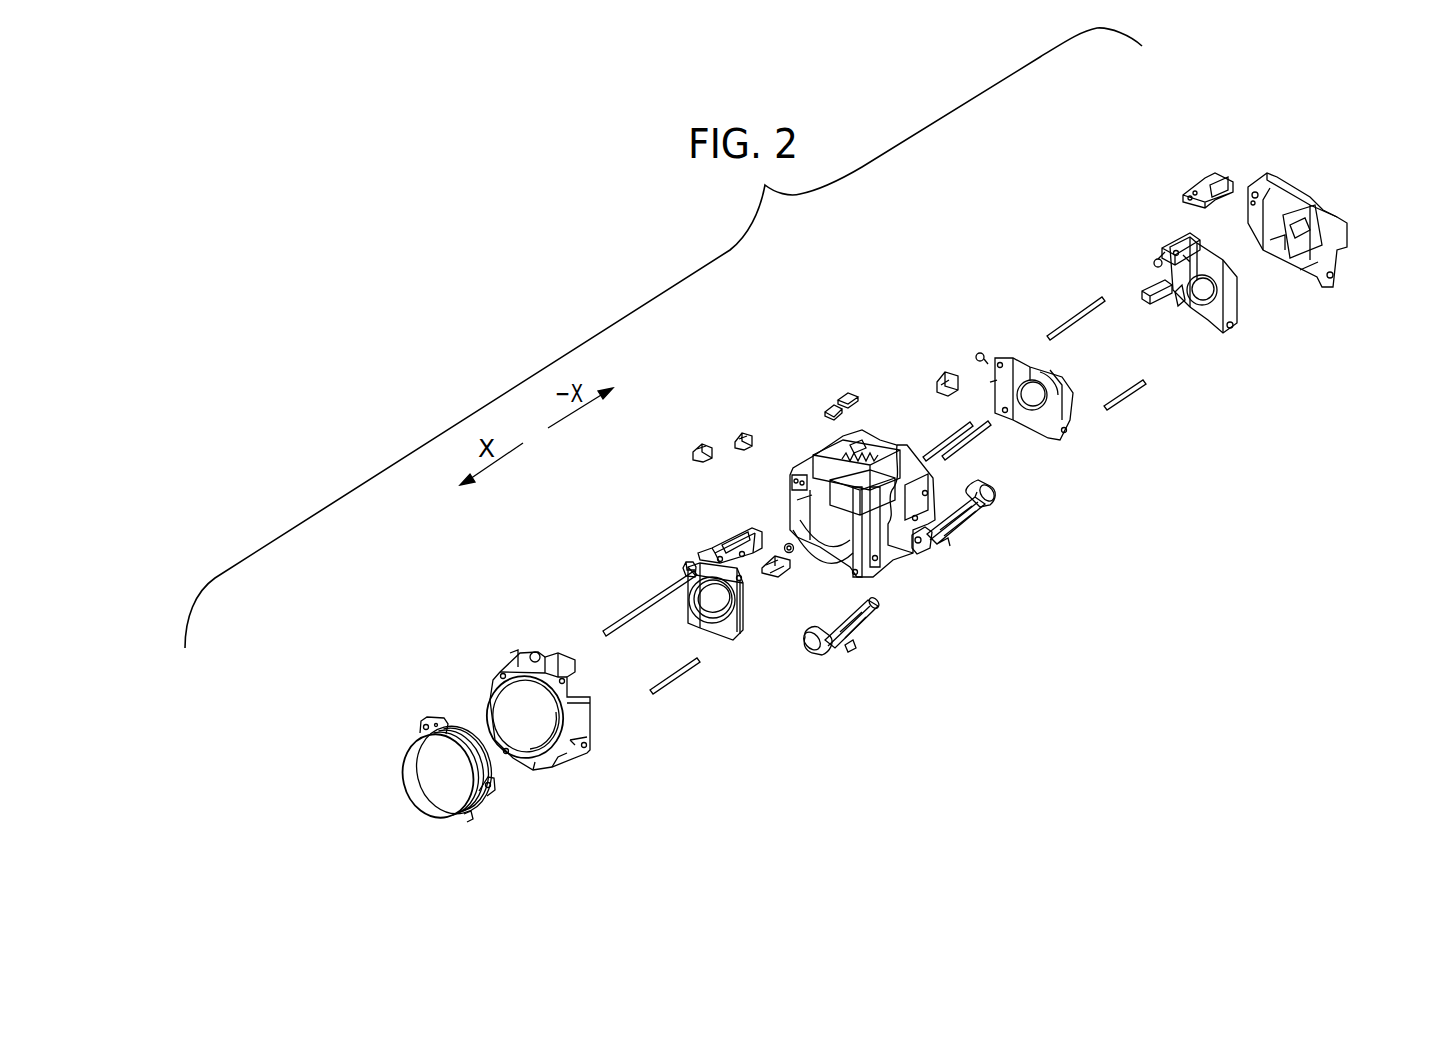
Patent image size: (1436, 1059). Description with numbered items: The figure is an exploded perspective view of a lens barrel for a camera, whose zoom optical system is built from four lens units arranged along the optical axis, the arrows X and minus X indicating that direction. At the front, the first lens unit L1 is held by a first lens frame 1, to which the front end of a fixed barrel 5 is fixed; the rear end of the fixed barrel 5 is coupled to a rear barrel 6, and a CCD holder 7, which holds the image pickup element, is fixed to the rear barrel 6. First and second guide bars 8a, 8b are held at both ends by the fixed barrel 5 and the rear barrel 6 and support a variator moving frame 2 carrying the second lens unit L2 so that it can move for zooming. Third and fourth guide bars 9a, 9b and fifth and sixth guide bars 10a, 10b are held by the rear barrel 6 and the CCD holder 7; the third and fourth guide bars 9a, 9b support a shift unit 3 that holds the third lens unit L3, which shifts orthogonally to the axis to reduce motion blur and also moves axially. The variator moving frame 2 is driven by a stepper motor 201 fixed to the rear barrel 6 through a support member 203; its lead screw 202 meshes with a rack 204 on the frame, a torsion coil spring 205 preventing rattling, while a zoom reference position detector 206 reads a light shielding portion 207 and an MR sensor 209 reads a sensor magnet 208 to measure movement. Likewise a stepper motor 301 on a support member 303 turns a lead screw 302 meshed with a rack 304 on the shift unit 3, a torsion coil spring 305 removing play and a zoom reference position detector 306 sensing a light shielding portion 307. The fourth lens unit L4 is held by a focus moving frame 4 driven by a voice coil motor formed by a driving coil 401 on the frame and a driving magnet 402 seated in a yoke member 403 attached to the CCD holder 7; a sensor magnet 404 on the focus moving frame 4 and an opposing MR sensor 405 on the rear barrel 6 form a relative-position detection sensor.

The first lens frame 1 is at (415, 712).
The first lens unit L1 is at (418, 763).
The fixed barrel 5 is at (505, 660).
The first guide bar 8a is at (630, 620).
The second guide bar 8b is at (670, 680).
The variator moving frame 2 is at (742, 632).
The second lens unit L2 is at (715, 605).
The rack 204 is at (770, 580).
The torsion coil spring 205 is at (785, 543).
The light shielding portion 207 is at (686, 566).
The sensor magnet 208 is at (720, 540).
The zoom reference position detector 206 is at (693, 450).
The zoom reference position detector 306 is at (740, 436).
The rear barrel 6 is at (805, 458).
The MR sensor 209 is at (830, 406).
The MR sensor 405 is at (848, 395).
The rack 304 is at (940, 375).
The torsion coil spring 305 is at (978, 353).
The light shielding portion 307 is at (992, 382).
The third guide bar 9a is at (945, 445).
The fourth guide bar 9b is at (975, 440).
The shift unit 3 is at (1013, 365).
The third lens unit L3 is at (1032, 397).
The fifth guide bar 10a is at (1070, 318).
The sixth guide bar 10b is at (1128, 392).
The driving coil 401 is at (1148, 290).
The driving magnet 402 is at (1205, 178).
The yoke member 403 is at (1190, 190).
The sensor magnet 404 is at (1177, 238).
The focus moving frame 4 is at (1245, 312).
The fourth lens unit L4 is at (1202, 292).
The CCD holder 7 is at (1318, 292).
The stepper motor 201 is at (989, 553).
The lead screw 202 is at (985, 507).
The support member 203 is at (940, 550).
The stepper motor 301 is at (882, 670).
The lead screw 302 is at (872, 608).
The support member 303 is at (858, 638).